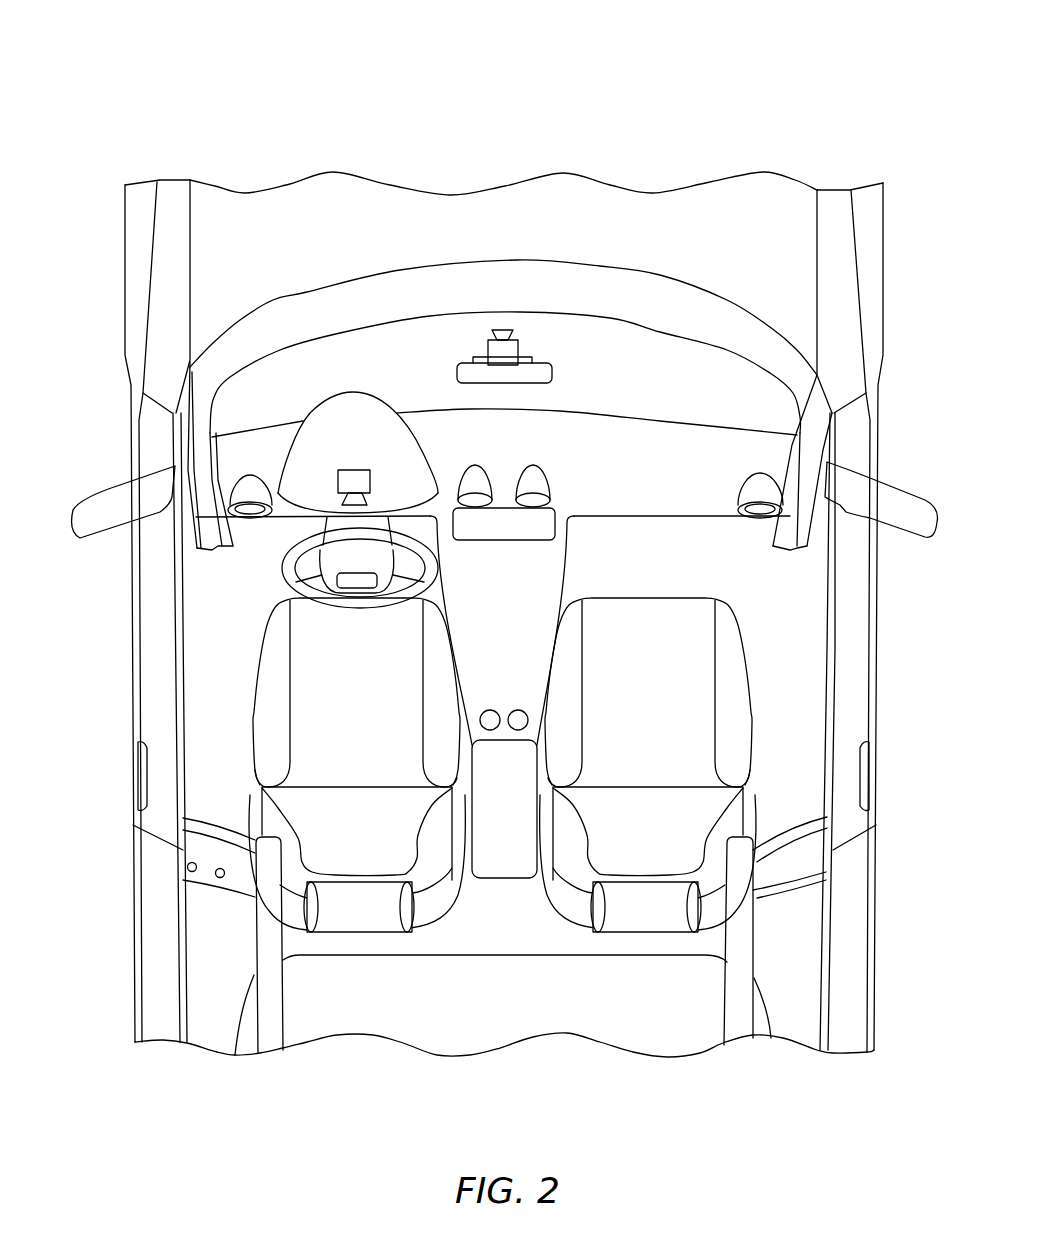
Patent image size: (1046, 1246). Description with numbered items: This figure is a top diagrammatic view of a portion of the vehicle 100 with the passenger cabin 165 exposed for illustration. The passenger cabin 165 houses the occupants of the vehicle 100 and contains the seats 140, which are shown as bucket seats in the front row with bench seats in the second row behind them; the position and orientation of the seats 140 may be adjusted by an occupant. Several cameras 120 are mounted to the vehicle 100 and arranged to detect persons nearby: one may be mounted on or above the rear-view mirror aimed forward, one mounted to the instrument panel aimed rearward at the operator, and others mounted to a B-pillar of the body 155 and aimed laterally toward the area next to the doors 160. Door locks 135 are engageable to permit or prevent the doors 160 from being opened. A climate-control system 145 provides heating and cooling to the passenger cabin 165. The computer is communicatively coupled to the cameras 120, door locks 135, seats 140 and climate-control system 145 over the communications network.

The vehicle 100 is at (240, 67).
The camera 120 is at (487, 347).
The door lock 135 is at (138, 783).
The seat 140 is at (456, 625).
The climate-control system 145 is at (568, 490).
The body 155 is at (838, 287).
The door 160 is at (150, 670).
The passenger cabin 165 is at (805, 615).